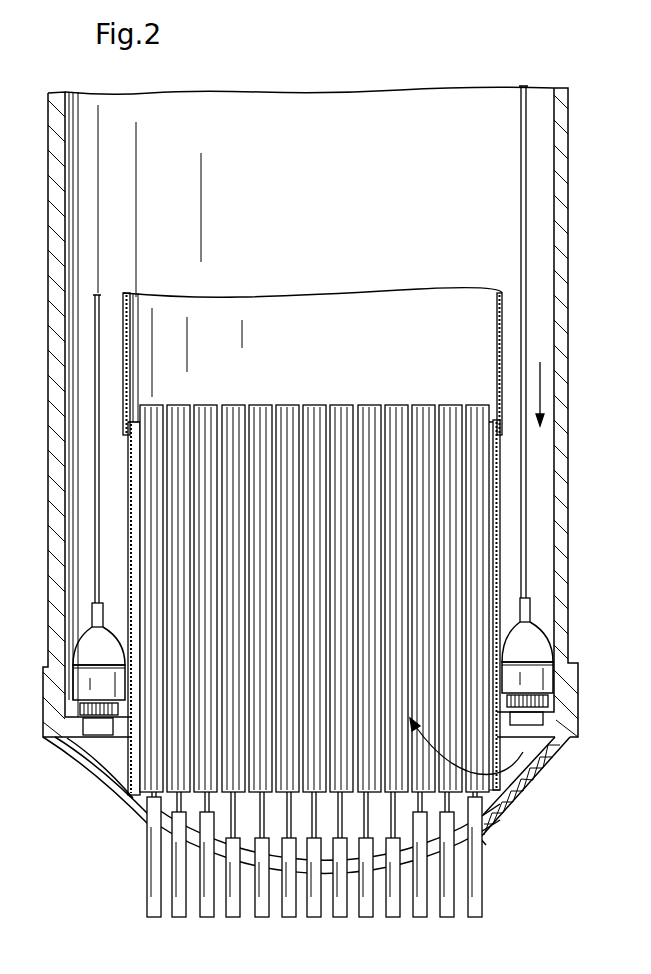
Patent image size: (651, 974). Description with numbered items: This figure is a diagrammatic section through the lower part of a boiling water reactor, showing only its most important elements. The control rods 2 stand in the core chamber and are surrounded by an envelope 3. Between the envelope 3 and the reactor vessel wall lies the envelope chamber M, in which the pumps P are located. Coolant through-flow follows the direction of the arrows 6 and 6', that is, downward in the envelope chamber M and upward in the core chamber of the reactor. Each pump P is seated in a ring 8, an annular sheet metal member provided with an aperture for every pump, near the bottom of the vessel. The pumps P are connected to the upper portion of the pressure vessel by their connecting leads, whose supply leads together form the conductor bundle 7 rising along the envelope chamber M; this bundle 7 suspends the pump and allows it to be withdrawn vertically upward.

The control rods 2 is at (280, 408).
The envelope 3 is at (500, 511).
The arrow 6 is at (562, 394).
The arrow 6' is at (351, 814).
The conductor bundle 7 is at (521, 200).
The ring 8 is at (555, 743).
The pumps P is at (88, 643).
The envelope chamber M is at (550, 563).